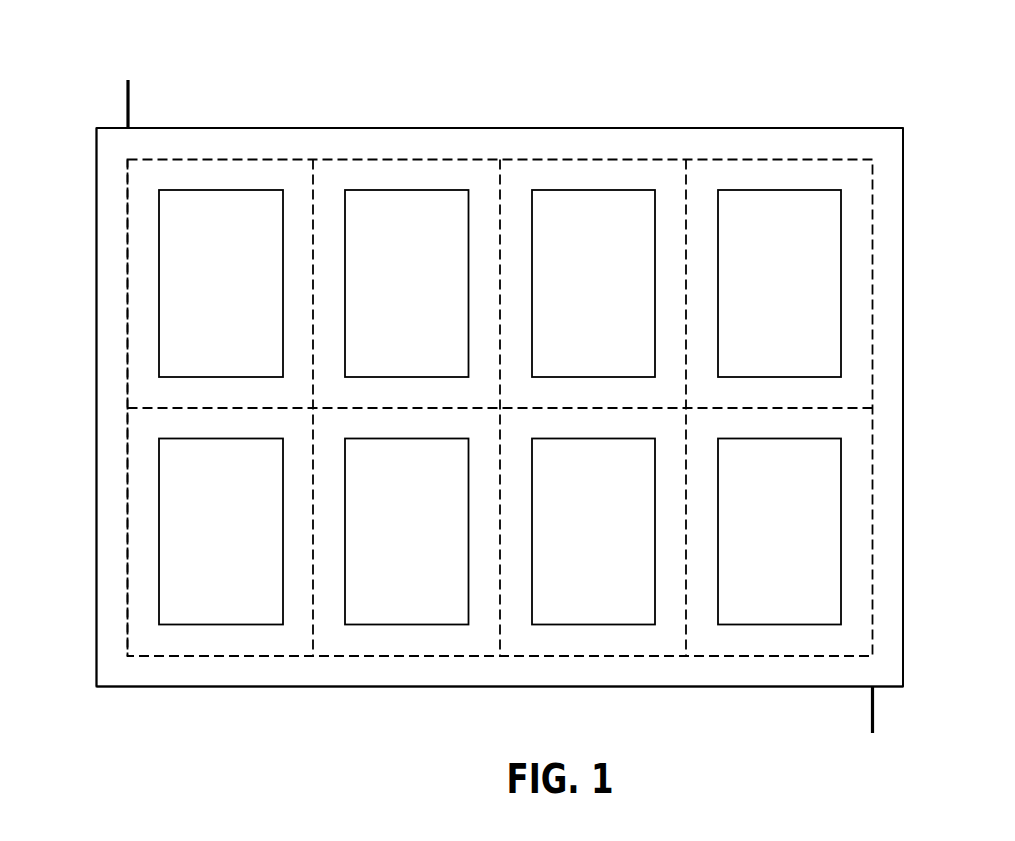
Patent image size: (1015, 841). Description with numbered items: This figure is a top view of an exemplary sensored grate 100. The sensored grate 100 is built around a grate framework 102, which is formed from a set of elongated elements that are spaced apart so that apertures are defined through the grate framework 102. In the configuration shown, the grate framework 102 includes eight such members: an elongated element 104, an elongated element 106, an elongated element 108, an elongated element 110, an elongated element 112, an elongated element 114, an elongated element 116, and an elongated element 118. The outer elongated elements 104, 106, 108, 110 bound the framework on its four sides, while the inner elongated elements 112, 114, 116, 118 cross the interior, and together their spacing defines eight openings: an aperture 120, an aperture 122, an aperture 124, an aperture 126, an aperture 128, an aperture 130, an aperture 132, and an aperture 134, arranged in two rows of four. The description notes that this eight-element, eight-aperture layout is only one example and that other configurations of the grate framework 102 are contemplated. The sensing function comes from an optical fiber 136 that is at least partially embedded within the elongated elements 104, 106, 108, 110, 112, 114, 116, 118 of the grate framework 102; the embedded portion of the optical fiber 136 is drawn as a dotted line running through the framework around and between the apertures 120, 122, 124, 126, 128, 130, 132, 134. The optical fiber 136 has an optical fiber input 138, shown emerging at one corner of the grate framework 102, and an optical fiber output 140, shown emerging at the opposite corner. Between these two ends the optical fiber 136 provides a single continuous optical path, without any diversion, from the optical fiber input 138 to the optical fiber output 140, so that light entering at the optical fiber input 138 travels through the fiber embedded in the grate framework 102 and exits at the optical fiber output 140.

The sensored grate 100 is at (873, 65).
The grate framework 102 is at (578, 128).
The elongated element 104 is at (763, 143).
The elongated element 106 is at (780, 423).
The elongated element 108 is at (468, 670).
The elongated element 110 is at (113, 393).
The elongated element 112 is at (298, 222).
The elongated element 114 is at (483, 222).
The elongated element 116 is at (702, 222).
The elongated element 118 is at (887, 360).
The aperture 120 is at (220, 287).
The aperture 122 is at (390, 220).
The aperture 124 is at (561, 220).
The aperture 126 is at (785, 282).
The aperture 128 is at (217, 538).
The aperture 130 is at (375, 595).
The aperture 132 is at (609, 595).
The aperture 134 is at (782, 539).
The optical fiber 136 is at (127, 331).
The optical fiber input 138 is at (127, 95).
The optical fiber output 140 is at (872, 715).